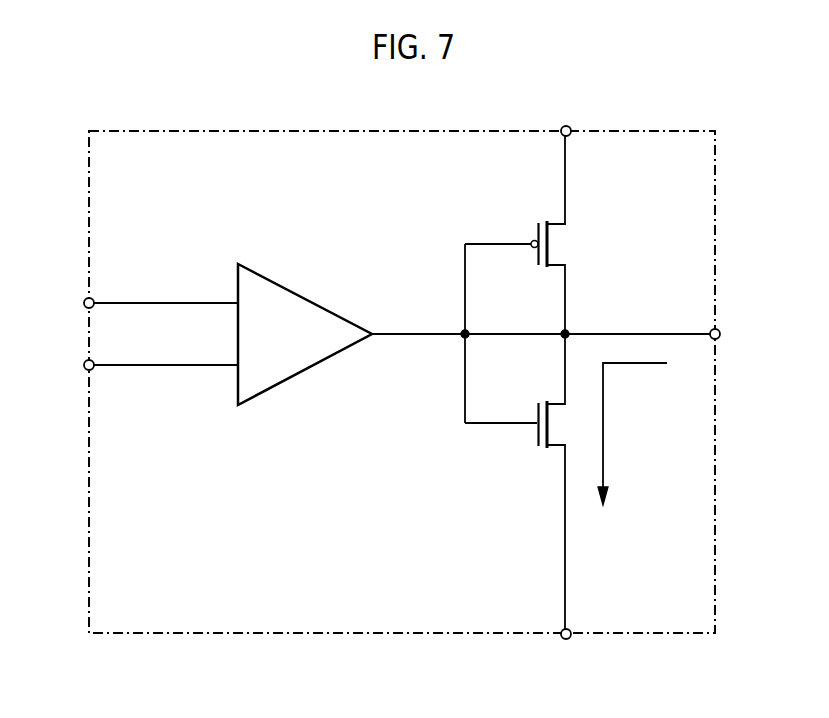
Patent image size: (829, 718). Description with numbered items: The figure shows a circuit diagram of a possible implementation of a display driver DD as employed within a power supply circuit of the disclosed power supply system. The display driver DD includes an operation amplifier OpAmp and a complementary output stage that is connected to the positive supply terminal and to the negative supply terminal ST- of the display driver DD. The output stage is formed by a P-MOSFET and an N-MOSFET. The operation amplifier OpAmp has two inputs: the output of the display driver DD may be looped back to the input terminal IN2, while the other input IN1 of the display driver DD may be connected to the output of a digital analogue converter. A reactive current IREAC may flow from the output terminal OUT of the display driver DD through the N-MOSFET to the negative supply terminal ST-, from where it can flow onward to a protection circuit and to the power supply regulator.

The display driver DD is at (402, 382).
The input IN1 is at (141, 305).
The input terminal IN2 is at (141, 367).
The operation amplifier OpAmp is at (305, 334).
The negative supply terminal ST- is at (568, 655).
The output terminal OUT is at (746, 336).
The reactive current IREAC is at (632, 434).